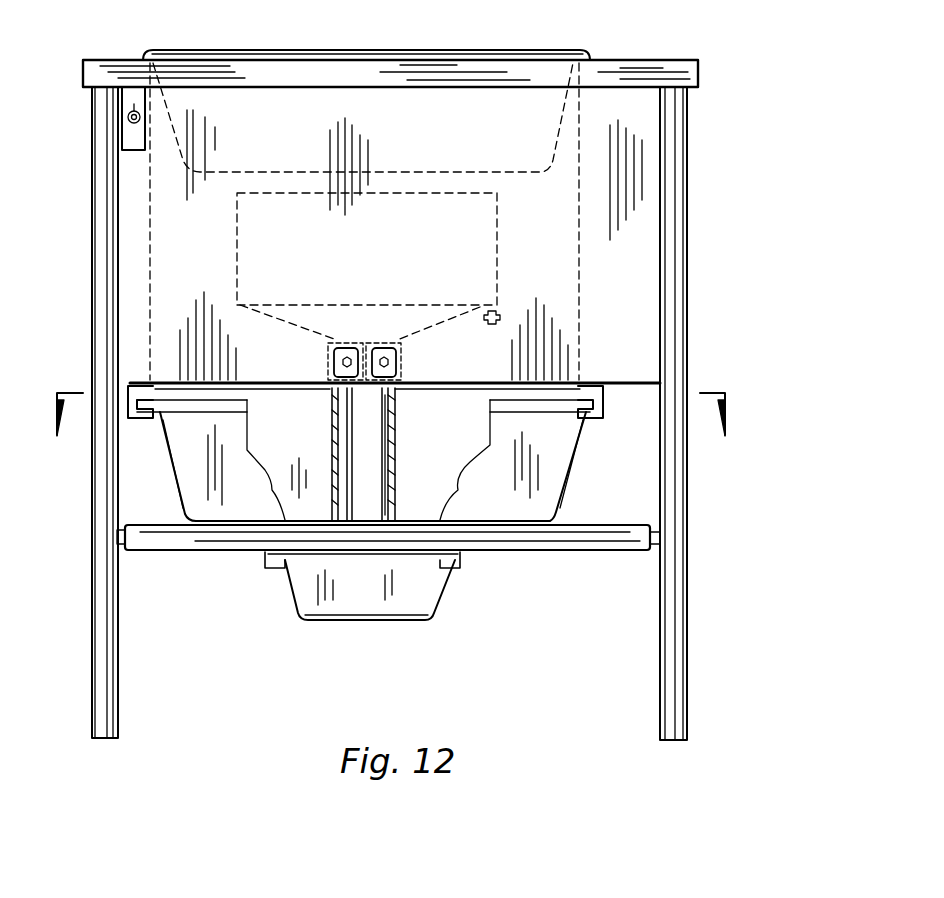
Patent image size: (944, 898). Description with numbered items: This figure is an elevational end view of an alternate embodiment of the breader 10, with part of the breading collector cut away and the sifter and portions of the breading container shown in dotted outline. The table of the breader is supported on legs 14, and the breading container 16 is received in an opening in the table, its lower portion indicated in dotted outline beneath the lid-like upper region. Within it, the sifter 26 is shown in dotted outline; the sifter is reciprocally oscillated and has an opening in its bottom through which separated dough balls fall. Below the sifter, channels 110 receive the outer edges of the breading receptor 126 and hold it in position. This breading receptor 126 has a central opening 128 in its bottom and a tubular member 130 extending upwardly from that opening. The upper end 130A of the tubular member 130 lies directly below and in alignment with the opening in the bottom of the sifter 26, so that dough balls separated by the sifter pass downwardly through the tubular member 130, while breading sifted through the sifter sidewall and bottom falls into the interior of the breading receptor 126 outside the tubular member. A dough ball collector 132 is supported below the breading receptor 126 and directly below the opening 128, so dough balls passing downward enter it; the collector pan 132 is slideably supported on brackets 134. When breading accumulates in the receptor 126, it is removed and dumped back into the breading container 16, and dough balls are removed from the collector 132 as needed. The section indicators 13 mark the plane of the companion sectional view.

The breader 10 is at (684, 46).
The section line of FIG. 13 is at (393, 439).
The legs 14 is at (105, 183).
The breading container 16 is at (548, 50).
The sifter 26 is at (478, 194).
The channels 110 is at (136, 423).
The breading receptor 126 is at (543, 480).
The central opening 128 is at (383, 510).
The tubular member 130 is at (392, 430).
The upper end of tubular portion 130A is at (343, 340).
The dough ball collector 132 is at (425, 600).
The brackets 134 is at (268, 566).